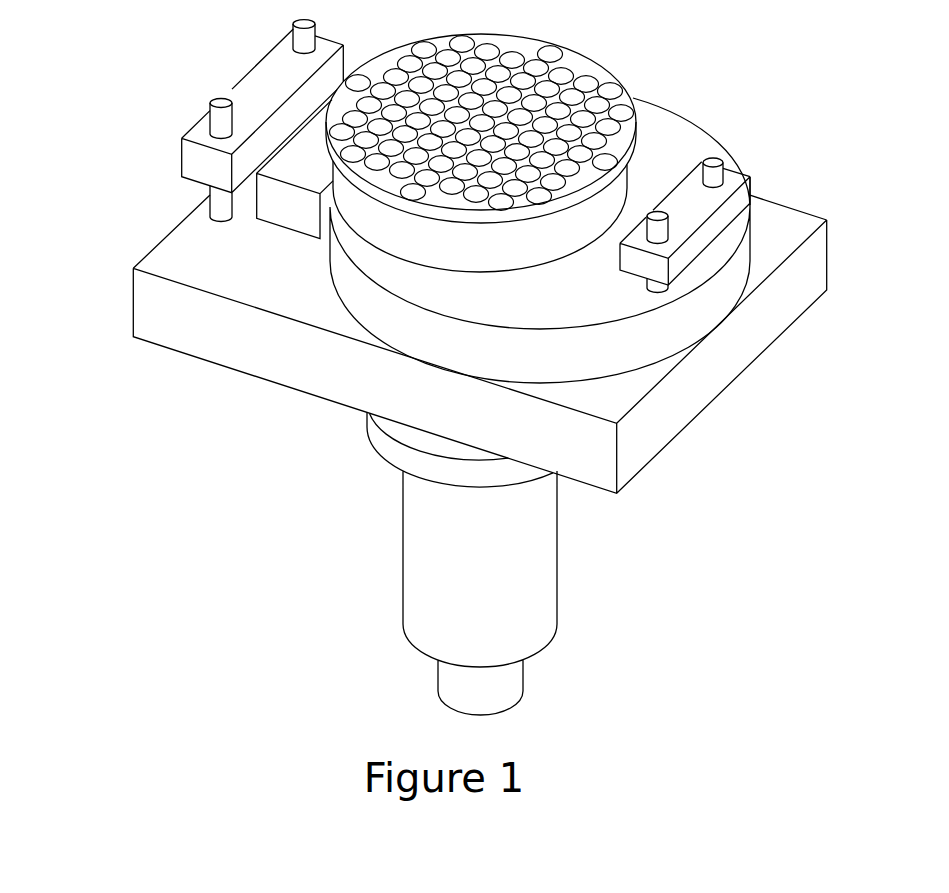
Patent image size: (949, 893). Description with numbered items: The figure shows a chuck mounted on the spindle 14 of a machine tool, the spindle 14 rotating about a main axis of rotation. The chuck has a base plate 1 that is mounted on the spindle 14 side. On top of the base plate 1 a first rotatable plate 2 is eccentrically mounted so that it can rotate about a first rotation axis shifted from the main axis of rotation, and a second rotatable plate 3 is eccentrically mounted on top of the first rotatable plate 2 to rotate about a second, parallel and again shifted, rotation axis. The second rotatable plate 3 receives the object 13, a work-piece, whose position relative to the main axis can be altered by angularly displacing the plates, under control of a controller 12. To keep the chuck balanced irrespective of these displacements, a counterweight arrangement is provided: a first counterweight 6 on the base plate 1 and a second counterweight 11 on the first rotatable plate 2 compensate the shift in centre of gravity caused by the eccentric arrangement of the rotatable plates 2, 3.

The base plate 1 is at (800, 277).
The first rotatable plate 2 is at (660, 138).
The second rotatable plate 3 is at (362, 207).
The first counterweight 6 is at (700, 213).
The second counterweight 11 is at (268, 93).
The controller 12 is at (293, 172).
The object 13 is at (575, 56).
The spindle 14 is at (517, 552).